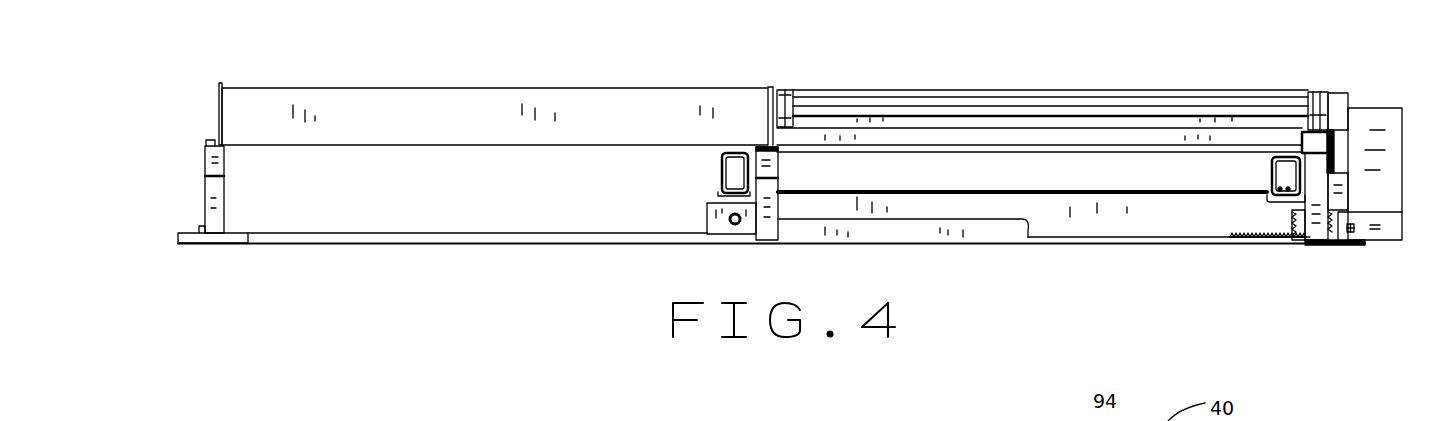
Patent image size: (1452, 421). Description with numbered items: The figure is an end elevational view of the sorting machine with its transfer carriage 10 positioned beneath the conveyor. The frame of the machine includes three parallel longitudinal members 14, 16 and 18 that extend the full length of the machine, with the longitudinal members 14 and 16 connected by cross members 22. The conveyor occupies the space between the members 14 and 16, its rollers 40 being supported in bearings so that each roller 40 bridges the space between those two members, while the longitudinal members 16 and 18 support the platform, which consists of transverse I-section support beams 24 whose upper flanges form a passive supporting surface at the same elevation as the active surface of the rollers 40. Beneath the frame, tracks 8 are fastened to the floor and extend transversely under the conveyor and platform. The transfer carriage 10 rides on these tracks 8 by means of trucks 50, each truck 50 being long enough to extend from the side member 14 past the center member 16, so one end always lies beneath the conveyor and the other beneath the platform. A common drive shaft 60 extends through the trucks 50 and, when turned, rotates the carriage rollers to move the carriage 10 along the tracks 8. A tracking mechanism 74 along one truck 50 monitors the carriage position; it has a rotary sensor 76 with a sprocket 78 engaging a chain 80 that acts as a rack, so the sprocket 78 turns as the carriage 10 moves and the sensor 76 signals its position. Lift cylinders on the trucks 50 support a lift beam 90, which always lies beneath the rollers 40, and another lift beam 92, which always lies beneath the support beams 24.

The tracks 8 is at (393, 244).
The transfer carriage 10 is at (707, 220).
The longitudinal member 14 is at (1333, 135).
The longitudinal member 16 is at (773, 165).
The longitudinal member 18 is at (212, 162).
The cross members 22 is at (997, 137).
The support beams 24 is at (410, 112).
The roller 40 is at (1152, 102).
The trucks 50 is at (944, 206).
The drive shaft 60 is at (737, 230).
The tracking mechanism 74 is at (1252, 236).
The rotary sensor 76 is at (1290, 217).
The sprocket 78 is at (1294, 232).
The chain 80 is at (1243, 247).
The lift beam 90 is at (1300, 165).
The lift beam 92 is at (722, 162).